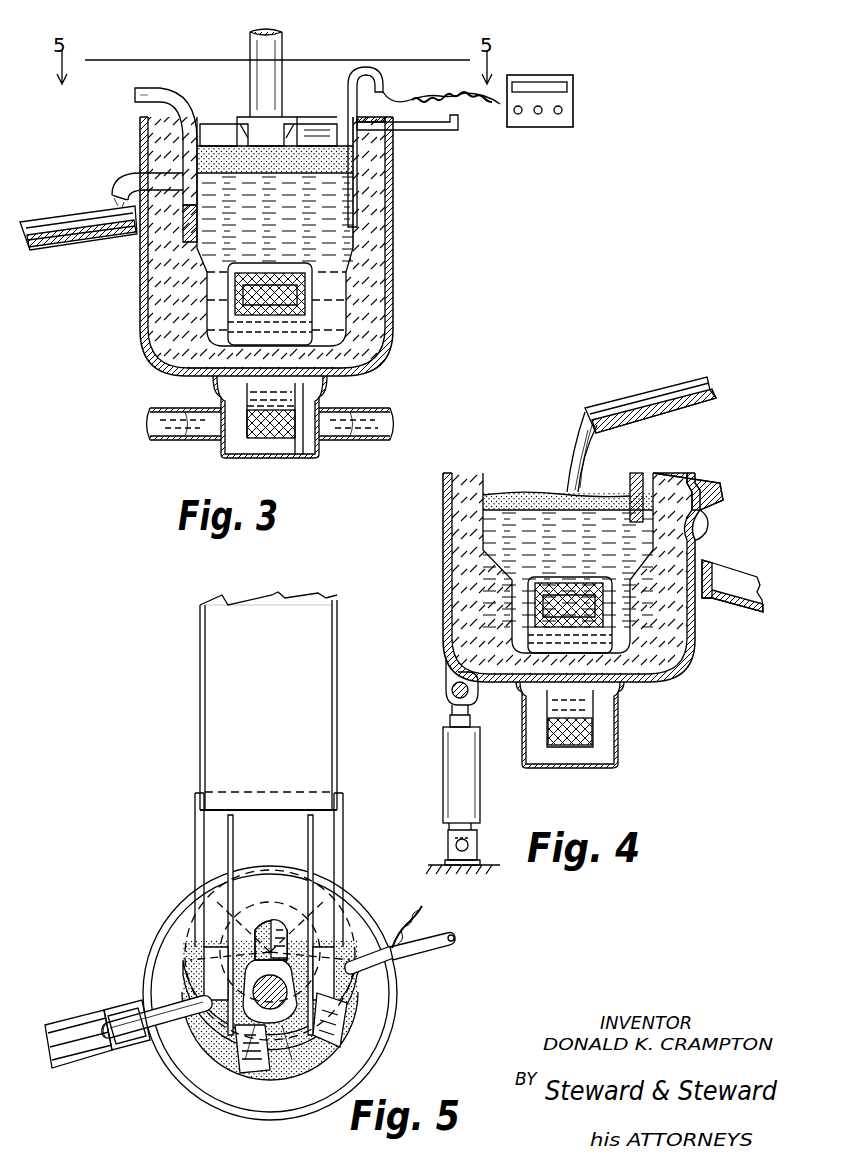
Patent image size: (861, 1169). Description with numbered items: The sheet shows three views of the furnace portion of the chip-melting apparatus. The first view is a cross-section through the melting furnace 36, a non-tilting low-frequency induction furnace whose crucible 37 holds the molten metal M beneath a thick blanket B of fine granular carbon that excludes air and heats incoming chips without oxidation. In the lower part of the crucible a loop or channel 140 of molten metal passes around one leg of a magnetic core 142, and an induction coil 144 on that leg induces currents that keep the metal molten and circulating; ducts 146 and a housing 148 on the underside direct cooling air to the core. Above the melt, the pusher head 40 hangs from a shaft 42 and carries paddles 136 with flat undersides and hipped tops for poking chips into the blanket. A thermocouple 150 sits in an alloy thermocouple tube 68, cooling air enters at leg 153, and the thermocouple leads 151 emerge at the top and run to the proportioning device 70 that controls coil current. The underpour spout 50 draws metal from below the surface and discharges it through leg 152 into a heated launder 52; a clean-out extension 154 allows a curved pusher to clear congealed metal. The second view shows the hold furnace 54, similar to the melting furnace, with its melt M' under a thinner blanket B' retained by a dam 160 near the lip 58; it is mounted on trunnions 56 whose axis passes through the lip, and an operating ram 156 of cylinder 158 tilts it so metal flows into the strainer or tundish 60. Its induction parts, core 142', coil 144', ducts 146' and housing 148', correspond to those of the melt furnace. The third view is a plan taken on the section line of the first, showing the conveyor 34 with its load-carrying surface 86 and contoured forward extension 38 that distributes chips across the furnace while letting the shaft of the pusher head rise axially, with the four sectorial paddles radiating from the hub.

In FIG. 5, the conveyor 34 is at (200, 700).
In FIG. 3, the melting furnace 36 is at (404, 250).
In FIG. 5, the melting furnace 36 is at (365, 906).
In FIG. 3, the crucible 37 is at (388, 272).
In FIG. 5, the forward extension 38 is at (195, 858).
In FIG. 3, the pusher head 40 is at (278, 140).
In FIG. 5, the pusher head 40 is at (288, 1070).
In FIG. 3, the shaft 42 is at (286, 58).
In FIG. 5, the shaft 42 is at (262, 978).
In FIG. 3, the underpour overflow feed spout 50 is at (199, 114).
In FIG. 5, the underpour overflow feed spout 50 is at (122, 1020).
In FIG. 3, the launder 52 is at (40, 252).
In FIG. 4, the launder 52 is at (646, 378).
In FIG. 5, the launder 52 is at (60, 1032).
In FIG. 4, the hold furnace 54 is at (436, 552).
In FIG. 4, the trunnions 56 is at (708, 526).
In FIG. 4, the lip 58 is at (708, 502).
In FIG. 4, the strainer or tundish 60 is at (712, 618).
In FIG. 3, the thermocouple tube 68 is at (367, 58).
In FIG. 5, the thermocouple tube 68 is at (374, 958).
In FIG. 3, the proportioning device 70 is at (573, 94).
In FIG. 5, the load-carrying surface 86 is at (268, 664).
In FIG. 3, the paddles 136 is at (310, 122).
In FIG. 5, the paddles 136 is at (280, 870).
In FIG. 3, the loop or channel 140 is at (338, 318).
In FIG. 3, the magnetic core 142 is at (302, 445).
In FIG. 3, the induction coil 144 is at (222, 378).
In FIG. 3, the ducts 146 is at (283, 431).
In FIG. 3, the housing 148 is at (270, 432).
In FIG. 3, the thermocouple 150 is at (358, 213).
In FIG. 3, the thermocouple leads 151 is at (418, 96).
In FIG. 5, the thermocouple leads 151 is at (426, 908).
In FIG. 3, the leg 152 is at (130, 173).
In FIG. 5, the leg 152 is at (122, 1058).
In FIG. 3, the leg 153 is at (412, 130).
In FIG. 5, the leg 153 is at (455, 948).
In FIG. 3, the clean-out extension 154 is at (146, 86).
In FIG. 5, the clean-out extension 154 is at (185, 1040).
In FIG. 4, the operating ram 156 is at (452, 718).
In FIG. 4, the cylinder 158 is at (463, 800).
In FIG. 4, the dam 160 is at (650, 468).
In FIG. 3, the blanket B is at (275, 127).
In FIG. 5, the blanket B is at (299, 1010).
In FIG. 4, the blanket B' is at (568, 470).
In FIG. 3, the molten metal M is at (275, 251).
In FIG. 4, the molten metal M' is at (568, 570).
In FIG. 4, the core 142' is at (565, 757).
In FIG. 4, the heater 144' is at (584, 601).
In FIG. 4, the slot 146' is at (611, 718).
In FIG. 4, the housing 148' is at (587, 738).